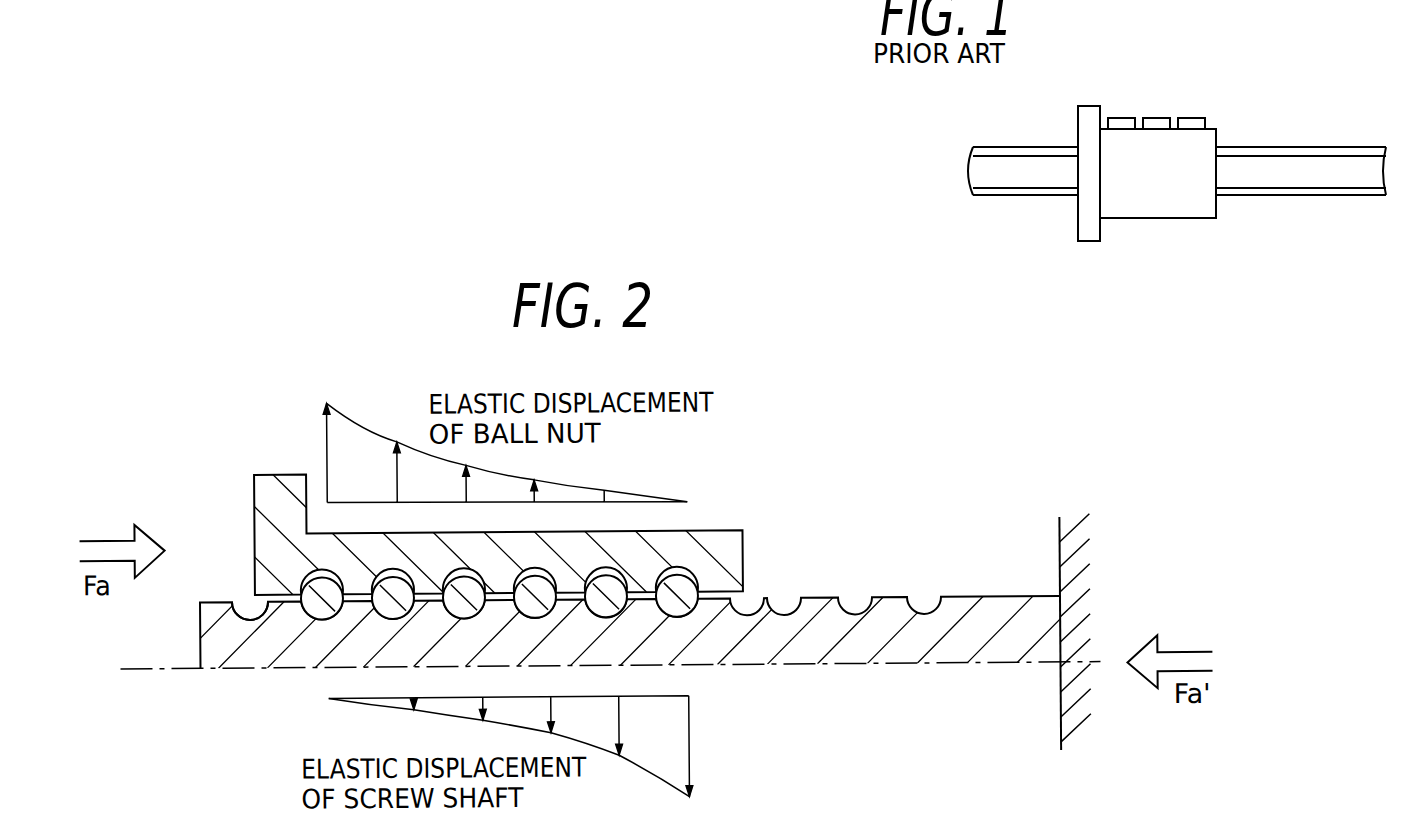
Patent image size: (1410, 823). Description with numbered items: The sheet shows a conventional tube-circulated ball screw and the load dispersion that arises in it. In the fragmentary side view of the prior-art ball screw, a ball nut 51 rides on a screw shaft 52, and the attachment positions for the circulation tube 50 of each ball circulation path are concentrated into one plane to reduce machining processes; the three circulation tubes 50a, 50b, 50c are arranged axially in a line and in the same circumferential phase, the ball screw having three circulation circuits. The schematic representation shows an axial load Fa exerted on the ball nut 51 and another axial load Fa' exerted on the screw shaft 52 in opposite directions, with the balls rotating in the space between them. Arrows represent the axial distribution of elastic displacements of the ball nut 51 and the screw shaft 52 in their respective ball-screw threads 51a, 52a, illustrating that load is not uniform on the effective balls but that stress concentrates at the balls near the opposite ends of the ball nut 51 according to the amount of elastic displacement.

In FIG. 1, the circulation tube 50 is at (1195, 64).
In FIG. 1, the circulation tube 50a is at (1123, 118).
In FIG. 1, the circulation tube 50b is at (1157, 118).
In FIG. 1, the circulation tube 50c is at (1229, 83).
In FIG. 1, the ball nut 51 is at (1151, 207).
In FIG. 2, the ball nut 51 is at (722, 541).
In FIG. 2, the ball-screw thread 51a is at (330, 582).
In FIG. 1, the screw shaft 52 is at (1040, 185).
In FIG. 2, the screw shaft 52 is at (795, 651).
In FIG. 2, the ball-screw thread 52a is at (260, 617).